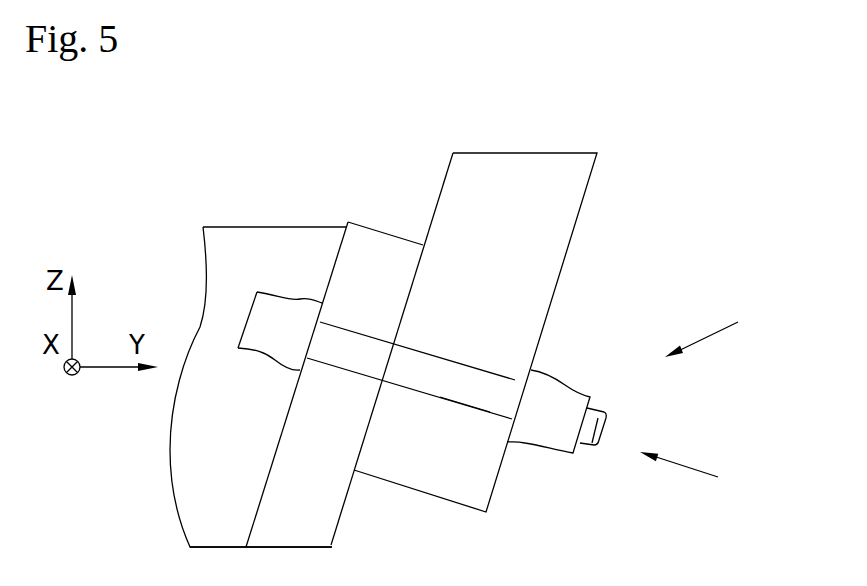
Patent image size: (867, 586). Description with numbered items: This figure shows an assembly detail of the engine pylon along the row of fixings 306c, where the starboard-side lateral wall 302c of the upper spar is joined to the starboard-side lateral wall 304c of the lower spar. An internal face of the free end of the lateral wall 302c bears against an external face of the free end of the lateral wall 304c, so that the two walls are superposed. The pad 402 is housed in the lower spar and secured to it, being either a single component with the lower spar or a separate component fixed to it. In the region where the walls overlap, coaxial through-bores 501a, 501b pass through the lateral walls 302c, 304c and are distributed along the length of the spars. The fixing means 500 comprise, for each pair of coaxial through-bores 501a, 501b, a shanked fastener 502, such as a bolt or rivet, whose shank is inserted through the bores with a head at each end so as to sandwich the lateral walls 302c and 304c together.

The pad 402 is at (242, 252).
The starboard-side lateral wall of the lower spar 304c is at (317, 538).
The through-bore 501b is at (350, 332).
The starboard-side lateral wall of the upper spar 302c is at (572, 177).
The shanked fastener 502 is at (550, 408).
The through-bore 501a is at (462, 408).
The row of fixings 306c is at (737, 332).
The fixing means 500 is at (705, 473).